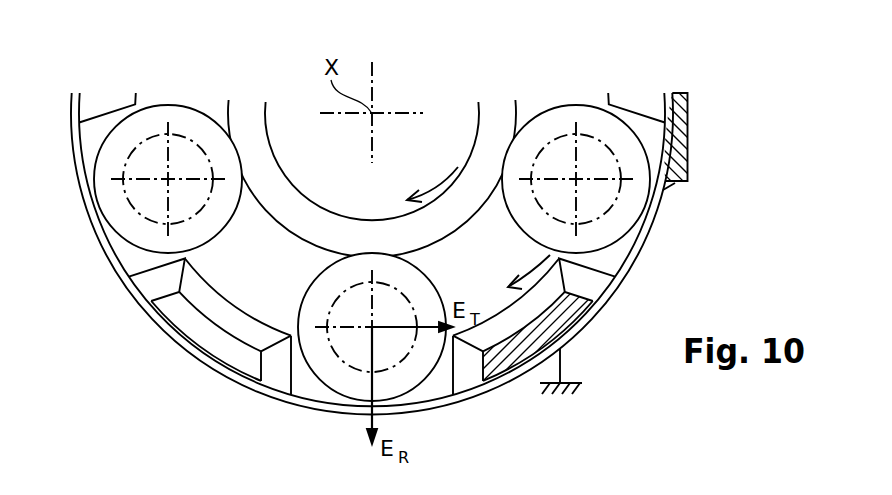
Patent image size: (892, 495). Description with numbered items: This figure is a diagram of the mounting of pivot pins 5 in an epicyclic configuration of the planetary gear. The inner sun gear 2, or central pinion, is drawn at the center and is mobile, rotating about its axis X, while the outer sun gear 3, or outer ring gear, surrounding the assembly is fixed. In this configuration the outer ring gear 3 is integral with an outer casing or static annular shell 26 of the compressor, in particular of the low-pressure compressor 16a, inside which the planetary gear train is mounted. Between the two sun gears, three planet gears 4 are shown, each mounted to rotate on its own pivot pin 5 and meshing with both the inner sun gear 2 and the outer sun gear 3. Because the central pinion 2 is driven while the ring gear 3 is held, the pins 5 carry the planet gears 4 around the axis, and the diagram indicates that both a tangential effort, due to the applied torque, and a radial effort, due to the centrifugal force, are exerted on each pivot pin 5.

The inner sun gear 2 is at (475, 182).
The outer sun gear 3 is at (638, 257).
The planet gear 4 is at (120, 213).
The pivot pin 5 is at (180, 150).
The annular shell 26 is at (690, 143).
The low-pressure compressor 16a is at (703, 122).